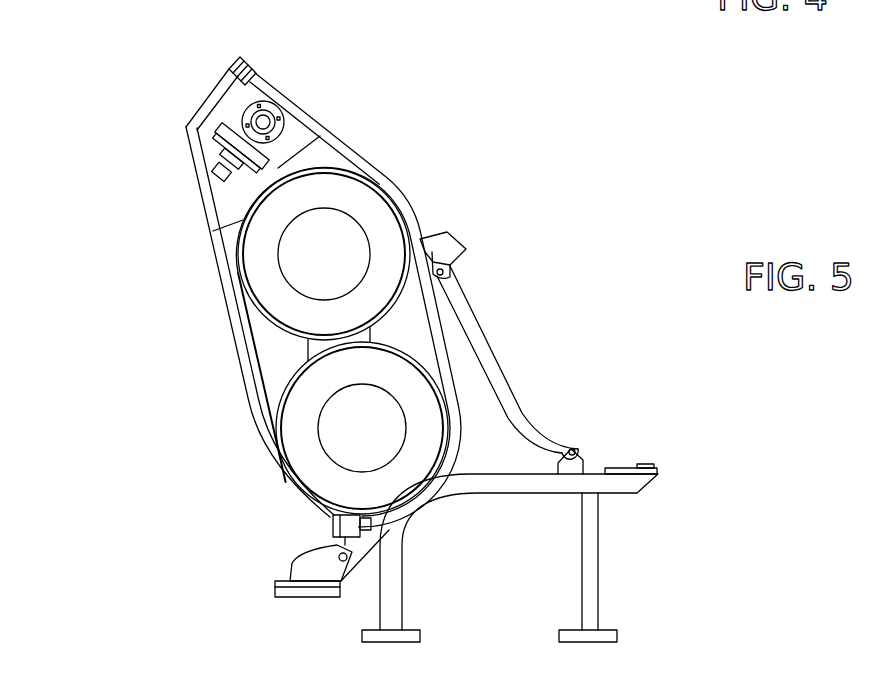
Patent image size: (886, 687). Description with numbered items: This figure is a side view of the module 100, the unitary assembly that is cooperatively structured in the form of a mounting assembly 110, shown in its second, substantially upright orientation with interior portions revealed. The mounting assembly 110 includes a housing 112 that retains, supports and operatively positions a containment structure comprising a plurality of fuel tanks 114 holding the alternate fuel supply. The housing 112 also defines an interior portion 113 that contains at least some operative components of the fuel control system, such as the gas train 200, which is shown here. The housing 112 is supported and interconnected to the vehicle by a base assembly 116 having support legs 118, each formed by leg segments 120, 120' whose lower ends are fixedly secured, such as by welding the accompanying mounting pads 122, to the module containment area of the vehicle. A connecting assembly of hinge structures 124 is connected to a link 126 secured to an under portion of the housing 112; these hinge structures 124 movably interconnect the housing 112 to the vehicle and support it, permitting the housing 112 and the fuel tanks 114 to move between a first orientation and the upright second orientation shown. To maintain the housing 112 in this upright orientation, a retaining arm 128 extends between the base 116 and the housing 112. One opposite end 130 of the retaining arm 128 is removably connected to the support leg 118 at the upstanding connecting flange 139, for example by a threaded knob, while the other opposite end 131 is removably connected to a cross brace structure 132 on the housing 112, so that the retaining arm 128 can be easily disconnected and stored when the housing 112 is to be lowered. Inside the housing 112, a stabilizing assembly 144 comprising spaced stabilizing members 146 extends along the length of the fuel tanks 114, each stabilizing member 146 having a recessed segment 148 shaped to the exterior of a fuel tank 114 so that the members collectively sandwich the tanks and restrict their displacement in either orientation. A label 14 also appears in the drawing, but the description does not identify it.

In FIG. 5, the module 100 is at (117, 93).
In FIG. 5, the mounting assembly 110 is at (628, 308).
In FIG. 5, the housing 112 is at (164, 293).
In FIG. 5, the interior portion 113 is at (237, 108).
In FIG. 5, the fuel tanks 114 is at (382, 184).
In FIG. 5, the base assembly 116 is at (702, 473).
In FIG. 5, the support legs 118 is at (653, 523).
In FIG. 5, the leg segment 120 is at (519, 552).
In FIG. 5, the leg segment 120' is at (649, 561).
In FIG. 4, the mounting pads 122 is at (483, 0).
In FIG. 5, the mounting pads 122 is at (418, 637).
In FIG. 5, the hinge structures 124 is at (288, 547).
In FIG. 5, the link 126 is at (362, 566).
In FIG. 5, the retaining arms 128 is at (503, 385).
In FIG. 5, the opposite end 130 is at (566, 446).
In FIG. 5, the opposite end 131 is at (458, 300).
In FIG. 5, the cross brace structure 132 is at (460, 232).
In FIG. 5, the connecting flange 139 is at (587, 467).
In FIG. 5, the tire 14 is at (470, 453).
In FIG. 5, the stabilizing assembly 144 is at (322, 158).
In FIG. 5, the stabilizing members 146 is at (347, 147).
In FIG. 5, the recessed segment 148 is at (250, 296).
In FIG. 5, the gas train 200 is at (258, 90).